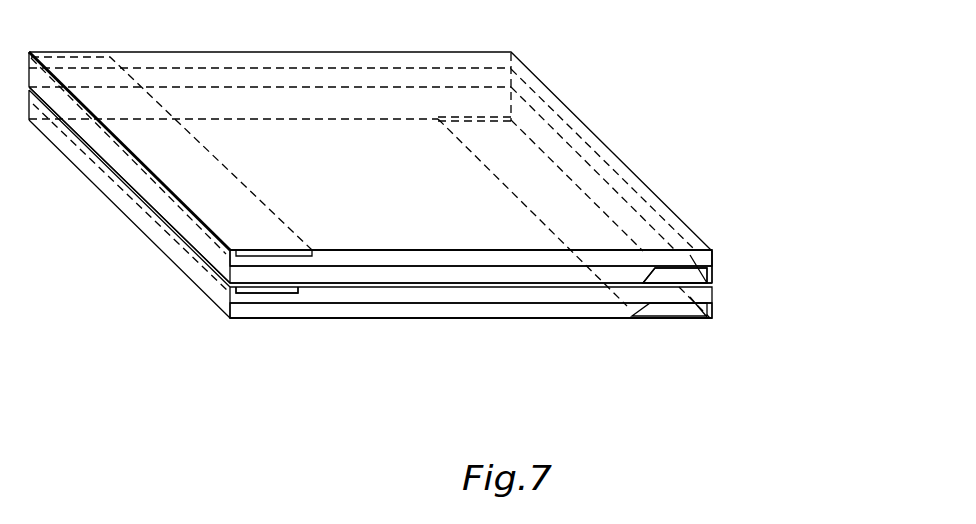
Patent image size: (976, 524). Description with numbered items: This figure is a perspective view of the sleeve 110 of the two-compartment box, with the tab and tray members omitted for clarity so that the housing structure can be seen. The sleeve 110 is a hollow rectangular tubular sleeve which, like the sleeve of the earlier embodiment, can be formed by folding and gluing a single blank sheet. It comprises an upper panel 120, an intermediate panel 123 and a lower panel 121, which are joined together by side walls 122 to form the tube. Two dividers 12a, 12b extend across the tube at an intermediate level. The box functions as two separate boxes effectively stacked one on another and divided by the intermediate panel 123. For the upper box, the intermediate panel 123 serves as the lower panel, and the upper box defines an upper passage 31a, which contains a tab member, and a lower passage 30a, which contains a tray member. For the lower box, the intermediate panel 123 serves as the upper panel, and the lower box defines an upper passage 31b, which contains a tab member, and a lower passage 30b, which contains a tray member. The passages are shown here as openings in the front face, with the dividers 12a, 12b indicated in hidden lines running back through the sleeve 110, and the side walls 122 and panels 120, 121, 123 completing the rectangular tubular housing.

The sleeve 110 is at (563, 78).
The divider 12a is at (502, 265).
The divider 12b is at (595, 305).
The upper panel 120 is at (348, 250).
The lower panel 121 is at (413, 317).
The side walls 122 is at (125, 202).
The intermediate panel 123 is at (463, 283).
The lower passage 30a is at (627, 278).
The lower passage 30b is at (315, 308).
The upper passage 31a is at (610, 258).
The upper passage 31b is at (310, 288).